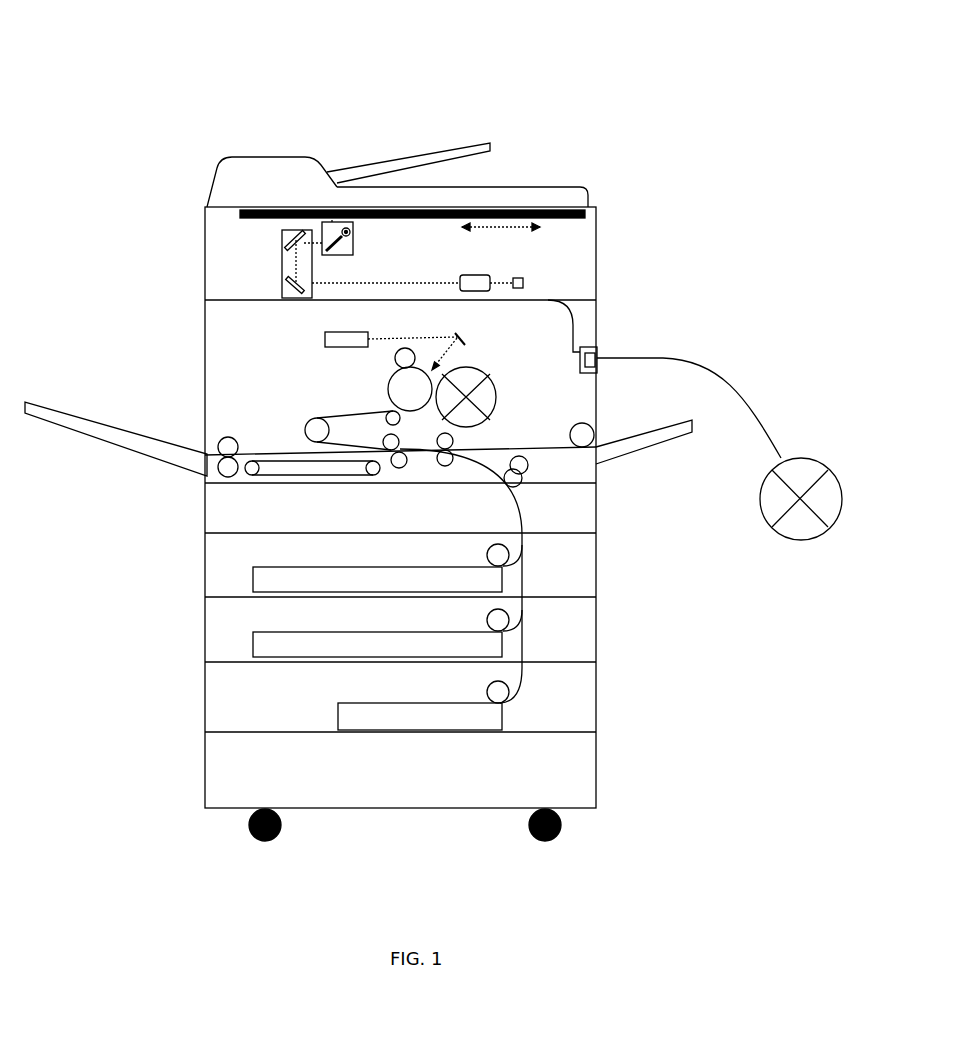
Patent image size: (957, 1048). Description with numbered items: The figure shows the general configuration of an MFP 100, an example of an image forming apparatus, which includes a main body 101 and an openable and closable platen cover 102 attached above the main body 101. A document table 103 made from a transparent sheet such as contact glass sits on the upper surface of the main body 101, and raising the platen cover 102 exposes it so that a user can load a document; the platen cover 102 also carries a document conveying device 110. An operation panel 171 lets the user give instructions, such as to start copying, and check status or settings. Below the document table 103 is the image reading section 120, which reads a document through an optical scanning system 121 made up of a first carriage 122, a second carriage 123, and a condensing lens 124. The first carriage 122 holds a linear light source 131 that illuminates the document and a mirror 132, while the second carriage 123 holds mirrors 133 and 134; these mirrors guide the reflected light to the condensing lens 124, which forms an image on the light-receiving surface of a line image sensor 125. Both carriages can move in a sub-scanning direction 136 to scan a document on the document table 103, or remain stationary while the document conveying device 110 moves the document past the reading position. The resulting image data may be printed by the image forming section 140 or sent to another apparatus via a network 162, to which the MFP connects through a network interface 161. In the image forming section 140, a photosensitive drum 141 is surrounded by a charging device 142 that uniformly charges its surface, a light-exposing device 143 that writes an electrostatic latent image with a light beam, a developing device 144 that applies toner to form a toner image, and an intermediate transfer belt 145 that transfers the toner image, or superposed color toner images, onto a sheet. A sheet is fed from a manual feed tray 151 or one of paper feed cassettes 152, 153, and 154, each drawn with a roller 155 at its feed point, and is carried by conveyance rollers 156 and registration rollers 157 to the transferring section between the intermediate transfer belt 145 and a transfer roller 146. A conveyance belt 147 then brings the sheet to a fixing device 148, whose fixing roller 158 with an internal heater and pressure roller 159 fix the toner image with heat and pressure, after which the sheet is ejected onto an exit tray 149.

The MFP 100 is at (590, 95).
The main body 101 is at (192, 313).
The platen cover 102 is at (192, 161).
The document table 103 is at (510, 212).
The document conveying device 110 is at (262, 156).
The image reading section 120 is at (603, 272).
The optical scanning system 121 is at (576, 240).
The first carriage 122 is at (337, 256).
The second carriage 123 is at (282, 258).
The condensing lens 124 is at (488, 277).
The line image sensor 125 is at (525, 284).
The linear light source 131 is at (353, 228).
The mirror 132 is at (347, 250).
The mirror 133 is at (283, 238).
The mirror 134 is at (288, 291).
The sub-scanning direction 136 is at (501, 237).
The image forming section 140 is at (600, 312).
The photosensitive drum 141 is at (392, 388).
The charging device 142 is at (395, 358).
The light-exposing device 143 is at (325, 340).
The developing device 144 is at (496, 385).
The intermediate transfer belt 145 is at (317, 418).
The transfer roller 146 is at (402, 470).
The conveyance belt 147 is at (260, 460).
The fixing device 148 is at (150, 430).
The exit tray 149 is at (45, 408).
The manual feed tray 151 is at (638, 445).
The paper feed cassette 152 is at (253, 578).
The paper feed cassette 153 is at (253, 643).
The paper feed cassette 154 is at (338, 715).
The feed roller 155 is at (592, 432).
The conveyance rollers 156 is at (528, 466).
The registration rollers 157 is at (449, 468).
The fixing roller 158 is at (222, 440).
The pressure roller 159 is at (220, 462).
The network interface 161 is at (602, 357).
The network 162 is at (822, 462).
The operation panel 171 is at (597, 192).